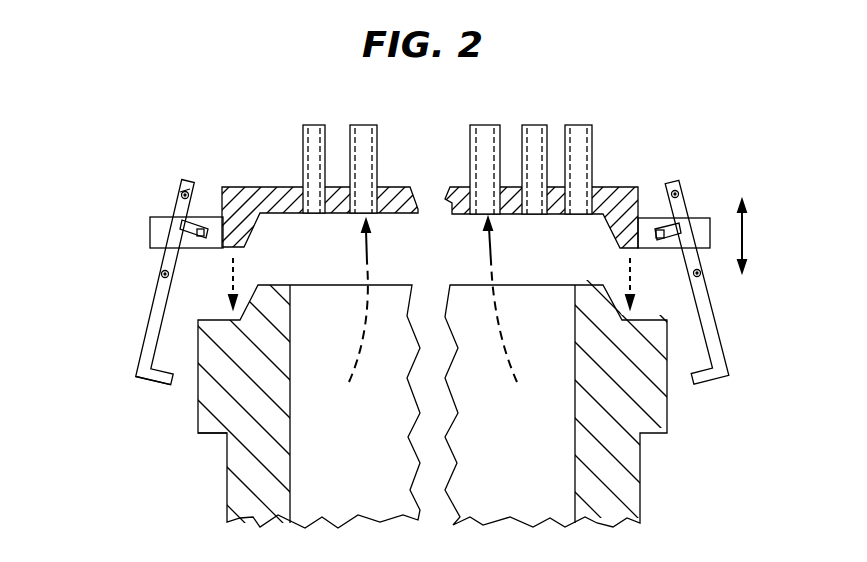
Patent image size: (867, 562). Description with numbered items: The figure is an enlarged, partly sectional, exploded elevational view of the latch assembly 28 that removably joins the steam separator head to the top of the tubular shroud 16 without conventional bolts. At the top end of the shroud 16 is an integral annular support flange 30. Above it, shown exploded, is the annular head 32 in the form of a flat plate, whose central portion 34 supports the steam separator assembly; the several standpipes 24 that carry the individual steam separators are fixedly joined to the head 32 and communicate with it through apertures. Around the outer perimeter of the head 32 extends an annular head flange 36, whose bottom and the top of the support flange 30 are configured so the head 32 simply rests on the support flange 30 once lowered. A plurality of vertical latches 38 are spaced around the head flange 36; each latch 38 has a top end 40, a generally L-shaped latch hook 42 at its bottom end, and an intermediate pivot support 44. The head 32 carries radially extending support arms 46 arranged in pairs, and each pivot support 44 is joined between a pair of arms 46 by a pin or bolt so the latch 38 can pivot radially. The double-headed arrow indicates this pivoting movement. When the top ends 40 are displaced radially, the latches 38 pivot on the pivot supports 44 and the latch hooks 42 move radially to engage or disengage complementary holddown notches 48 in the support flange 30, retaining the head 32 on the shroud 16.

The shroud 16 is at (643, 470).
The standpipes 24 is at (593, 135).
The latch assembly 28 is at (146, 180).
The support flange 30 is at (198, 420).
The head 32 is at (621, 182).
The central portion 34 is at (394, 186).
The head flange 36 is at (278, 186).
The latch 38 is at (142, 340).
The top end 40 is at (185, 178).
The latch hook 42 is at (148, 387).
The pivot support 44 is at (206, 221).
The support arms 46 is at (150, 228).
The holddown notch 48 is at (212, 436).